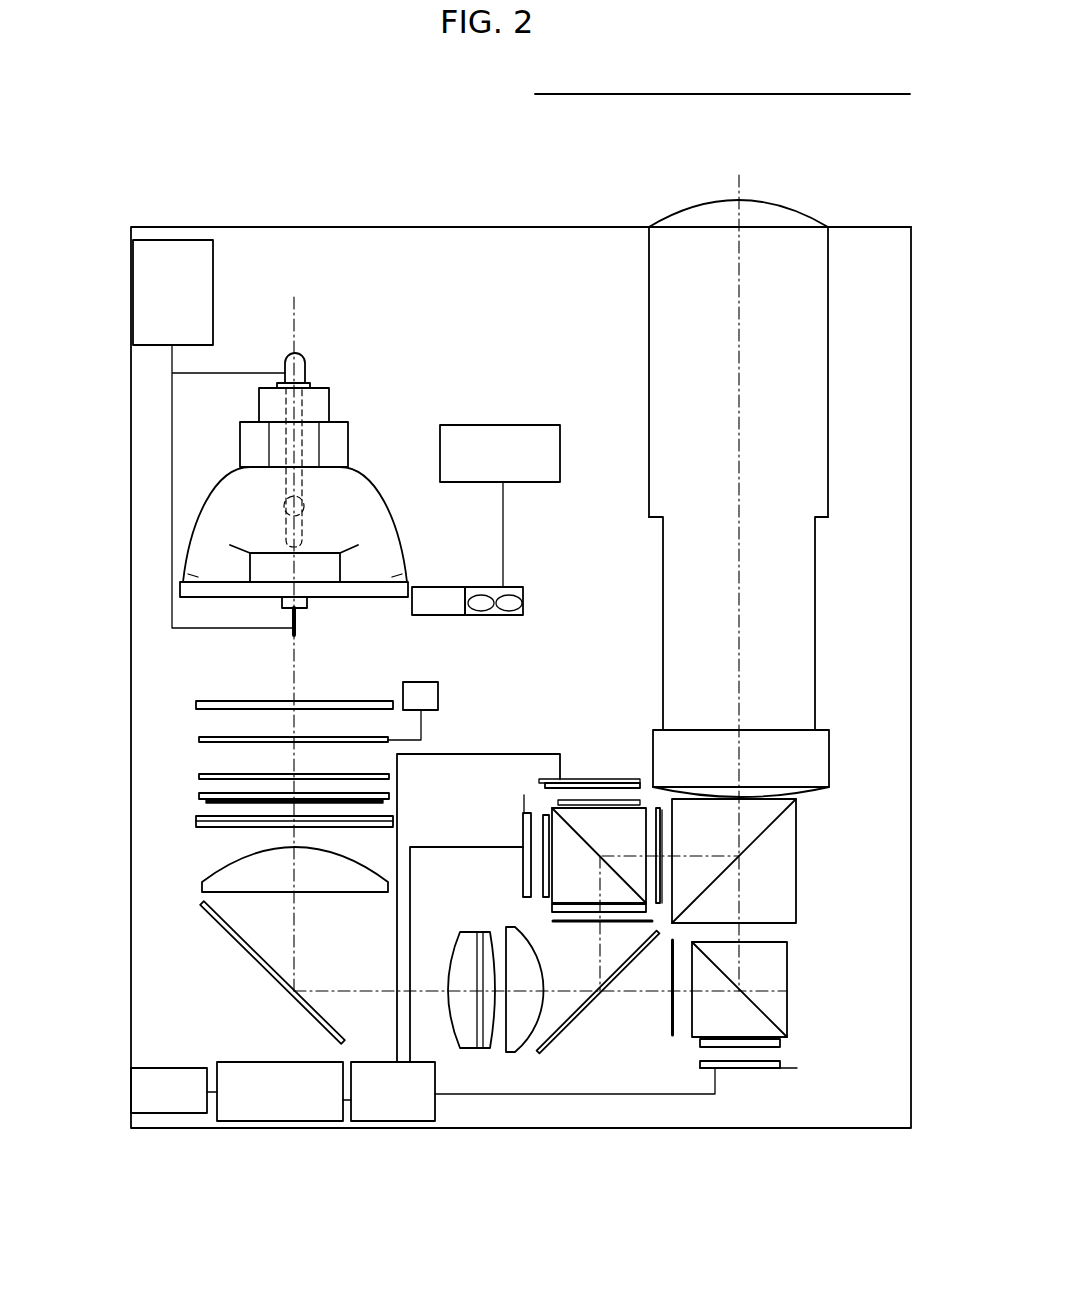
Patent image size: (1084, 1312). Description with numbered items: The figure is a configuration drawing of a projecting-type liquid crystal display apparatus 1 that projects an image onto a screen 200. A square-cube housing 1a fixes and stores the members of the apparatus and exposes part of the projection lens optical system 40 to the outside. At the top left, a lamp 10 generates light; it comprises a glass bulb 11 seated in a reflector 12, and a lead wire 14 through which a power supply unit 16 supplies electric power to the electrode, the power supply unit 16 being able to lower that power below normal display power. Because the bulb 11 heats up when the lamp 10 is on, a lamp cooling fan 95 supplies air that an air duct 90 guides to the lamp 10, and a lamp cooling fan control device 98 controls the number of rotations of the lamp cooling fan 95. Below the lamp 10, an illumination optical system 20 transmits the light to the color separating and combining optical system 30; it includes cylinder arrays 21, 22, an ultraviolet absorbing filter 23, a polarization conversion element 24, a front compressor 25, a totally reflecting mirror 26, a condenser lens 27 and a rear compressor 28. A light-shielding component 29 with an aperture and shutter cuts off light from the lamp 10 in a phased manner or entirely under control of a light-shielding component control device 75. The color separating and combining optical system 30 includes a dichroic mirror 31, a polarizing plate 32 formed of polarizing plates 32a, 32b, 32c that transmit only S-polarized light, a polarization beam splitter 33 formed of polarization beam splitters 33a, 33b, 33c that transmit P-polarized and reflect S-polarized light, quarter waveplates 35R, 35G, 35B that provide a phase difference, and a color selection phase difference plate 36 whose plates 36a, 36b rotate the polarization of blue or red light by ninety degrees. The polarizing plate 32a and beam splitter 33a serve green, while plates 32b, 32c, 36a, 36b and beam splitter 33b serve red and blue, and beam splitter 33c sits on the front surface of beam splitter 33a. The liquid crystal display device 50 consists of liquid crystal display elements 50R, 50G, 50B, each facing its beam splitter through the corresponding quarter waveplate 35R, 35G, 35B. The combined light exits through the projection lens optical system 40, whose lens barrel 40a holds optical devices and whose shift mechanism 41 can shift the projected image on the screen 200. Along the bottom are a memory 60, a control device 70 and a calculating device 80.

The liquid crystal display apparatus 1 is at (350, 154).
The housing 1a is at (848, 226).
The screen 200 is at (835, 92).
The lamp 10 is at (310, 494).
The bulb 11 is at (284, 506).
The reflector 12 is at (398, 520).
The lead wire 14 is at (212, 374).
The power supply unit 16 is at (222, 305).
The illumination optical system 20 is at (231, 852).
The cylinder array 21 is at (198, 704).
The cylinder array 22 is at (199, 797).
The ultraviolet absorbing filter 23 is at (198, 777).
The polarization conversion element 24 is at (196, 823).
The front compressor 25 is at (204, 886).
The totally reflecting mirror 26 is at (243, 945).
The condenser lens 27 is at (470, 1050).
The rear compressor 28 is at (512, 1054).
The light-shielding component 29 is at (190, 738).
The color separating and combining optical system 30 is at (791, 918).
The dichroic mirror 31 is at (548, 1048).
The polarizing plate 32 is at (651, 1097).
The polarizing plate 32a is at (668, 1038).
The polarizing plate 32b is at (552, 921).
The polarizing plate 32c is at (662, 810).
The polarization beam splitter 33 is at (796, 986).
The polarization beam splitter 33a is at (778, 1006).
The polarization beam splitter 33b is at (551, 807).
The polarization beam splitter 33c is at (790, 832).
The ¼ waveplate 35R is at (522, 812).
The ¼ waveplate 35G is at (782, 1043).
The ¼ waveplate 35B is at (560, 779).
The color selection phase difference plate 36 is at (572, 640).
The color selection phase difference plate 36a is at (551, 908).
The color selection phase difference plate 36b is at (655, 810).
The projection lens optical system 40 is at (802, 240).
The lens barrel 40a is at (803, 380).
The shift mechanism 41 is at (833, 748).
The liquid crystal display device 50 is at (785, 1115).
The liquid crystal display element 50R is at (542, 816).
The liquid crystal display element 50G is at (750, 1069).
The liquid crystal display element 50B is at (585, 778).
The memory 60 is at (173, 1114).
The control device 70 is at (372, 1122).
The light-shielding component control device 75 is at (425, 681).
The calculating device 80 is at (282, 1122).
The air duct 90 is at (455, 587).
The lamp cooling fan 95 is at (523, 587).
The lamp cooling fan control device 98 is at (507, 424).